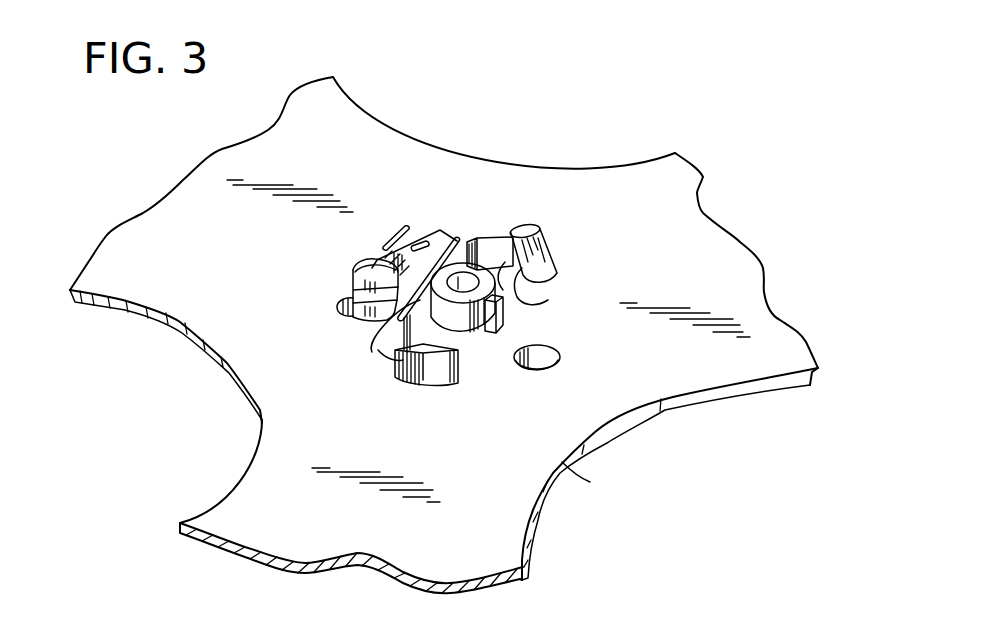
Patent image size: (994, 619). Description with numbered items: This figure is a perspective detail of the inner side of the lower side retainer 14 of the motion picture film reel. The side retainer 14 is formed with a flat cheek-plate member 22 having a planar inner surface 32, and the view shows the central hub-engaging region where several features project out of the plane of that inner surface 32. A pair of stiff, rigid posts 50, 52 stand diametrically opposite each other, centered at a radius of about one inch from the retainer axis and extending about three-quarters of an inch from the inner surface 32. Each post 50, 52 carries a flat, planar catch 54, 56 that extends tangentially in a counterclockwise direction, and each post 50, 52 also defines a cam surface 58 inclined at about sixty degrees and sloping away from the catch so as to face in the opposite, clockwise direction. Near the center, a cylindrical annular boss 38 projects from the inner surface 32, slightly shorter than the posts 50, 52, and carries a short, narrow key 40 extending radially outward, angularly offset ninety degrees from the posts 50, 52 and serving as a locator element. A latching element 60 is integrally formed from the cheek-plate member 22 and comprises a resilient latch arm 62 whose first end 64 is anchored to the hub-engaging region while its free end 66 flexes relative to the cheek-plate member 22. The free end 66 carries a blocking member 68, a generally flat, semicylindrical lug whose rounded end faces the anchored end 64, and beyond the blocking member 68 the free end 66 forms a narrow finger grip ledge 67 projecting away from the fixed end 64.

The side retainer 14 is at (626, 147).
The cheek-plate member 22 is at (572, 465).
The inner surface 32 is at (410, 167).
The cylindrical annular boss 38 is at (455, 322).
The key 40 is at (500, 314).
The post 50 is at (525, 270).
The post 52 is at (384, 347).
The catch 54 is at (523, 231).
The catch 56 is at (462, 325).
The cam surface 58 is at (548, 257).
The latching element 60 is at (417, 252).
The latch arm 62 is at (397, 237).
The first end 64 is at (437, 235).
The free end 66 is at (350, 297).
The finger grip ledge 67 is at (355, 316).
The blocking member 68 is at (367, 266).